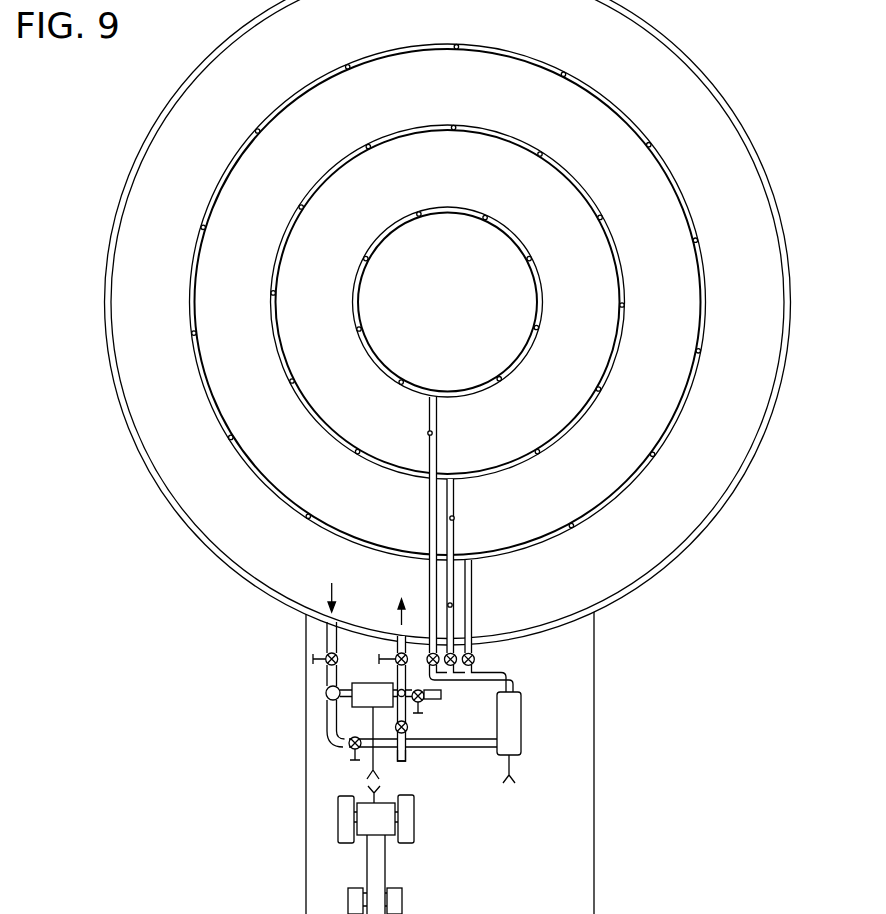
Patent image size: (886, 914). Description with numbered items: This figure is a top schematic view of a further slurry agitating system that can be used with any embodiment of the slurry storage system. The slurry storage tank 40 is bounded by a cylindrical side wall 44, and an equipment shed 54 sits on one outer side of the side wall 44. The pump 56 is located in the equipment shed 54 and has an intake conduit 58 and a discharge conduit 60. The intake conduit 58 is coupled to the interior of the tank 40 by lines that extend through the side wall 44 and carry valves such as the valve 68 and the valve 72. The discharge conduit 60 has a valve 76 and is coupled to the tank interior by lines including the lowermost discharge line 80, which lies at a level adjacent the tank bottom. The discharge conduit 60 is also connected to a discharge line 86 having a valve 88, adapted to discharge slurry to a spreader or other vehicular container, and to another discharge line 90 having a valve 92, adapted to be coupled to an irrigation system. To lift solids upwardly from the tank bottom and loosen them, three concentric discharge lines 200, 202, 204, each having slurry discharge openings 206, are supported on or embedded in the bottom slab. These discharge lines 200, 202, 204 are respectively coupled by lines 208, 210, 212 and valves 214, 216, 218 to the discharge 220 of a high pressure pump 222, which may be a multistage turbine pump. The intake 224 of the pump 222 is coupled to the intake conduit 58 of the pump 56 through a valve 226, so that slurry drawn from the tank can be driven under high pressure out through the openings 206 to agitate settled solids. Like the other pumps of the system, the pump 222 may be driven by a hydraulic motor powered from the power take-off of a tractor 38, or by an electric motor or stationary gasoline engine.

The tractor 38 is at (366, 866).
The slurry storage tank 40 is at (748, 328).
The cylindrical side wall 44 is at (793, 284).
The equipment shed 54 is at (304, 802).
The pump 56 is at (375, 731).
The intake conduit 58 is at (325, 693).
The discharge conduit 60 is at (396, 689).
The valve 68 is at (339, 633).
The valve 72 is at (325, 656).
The valve 76 is at (397, 637).
The lowermost discharge line 80 is at (403, 640).
The discharge line 86 is at (406, 762).
The valve 88 is at (410, 727).
The discharge line 90 is at (438, 701).
The valve 92 is at (443, 694).
The discharge line 200 is at (531, 355).
The discharge line 202 is at (569, 434).
The discharge line 204 is at (622, 500).
The slurry discharge openings 206 is at (498, 381).
The line 208 is at (429, 512).
The line 210 is at (454, 515).
The line 212 is at (472, 591).
The valve 214 is at (437, 651).
The valve 216 is at (455, 652).
The valve 218 is at (475, 658).
The discharge 220 is at (502, 672).
The high pressure pump 222 is at (522, 733).
The intake 224 is at (471, 750).
The valve 226 is at (344, 750).